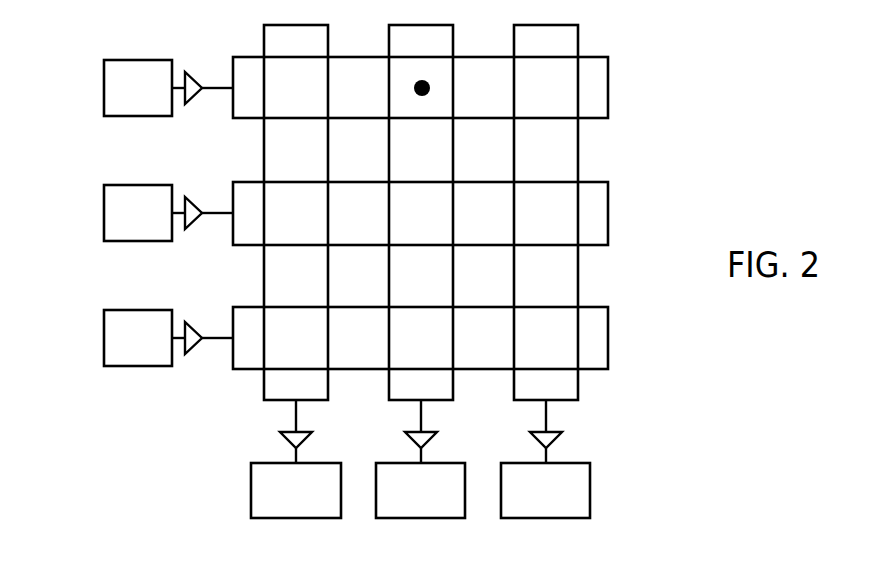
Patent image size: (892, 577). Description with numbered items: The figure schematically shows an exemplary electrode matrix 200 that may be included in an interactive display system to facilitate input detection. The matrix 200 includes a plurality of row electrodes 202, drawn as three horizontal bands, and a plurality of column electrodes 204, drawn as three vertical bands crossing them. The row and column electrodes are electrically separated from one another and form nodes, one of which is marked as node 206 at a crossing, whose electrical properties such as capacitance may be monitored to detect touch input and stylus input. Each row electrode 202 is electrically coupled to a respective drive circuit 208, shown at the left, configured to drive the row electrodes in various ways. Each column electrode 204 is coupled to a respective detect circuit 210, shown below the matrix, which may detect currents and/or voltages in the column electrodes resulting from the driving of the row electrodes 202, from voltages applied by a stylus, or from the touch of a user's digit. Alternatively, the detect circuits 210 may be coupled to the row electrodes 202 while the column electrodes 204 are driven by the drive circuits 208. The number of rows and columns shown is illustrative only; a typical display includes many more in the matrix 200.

The electrode matrix 200 is at (352, 296).
The row electrodes 202 is at (66, 213).
The column electrodes 204 is at (424, 534).
The node 206 is at (428, 95).
The drive circuit 208 is at (168, 213).
The detect circuit 210 is at (420, 459).